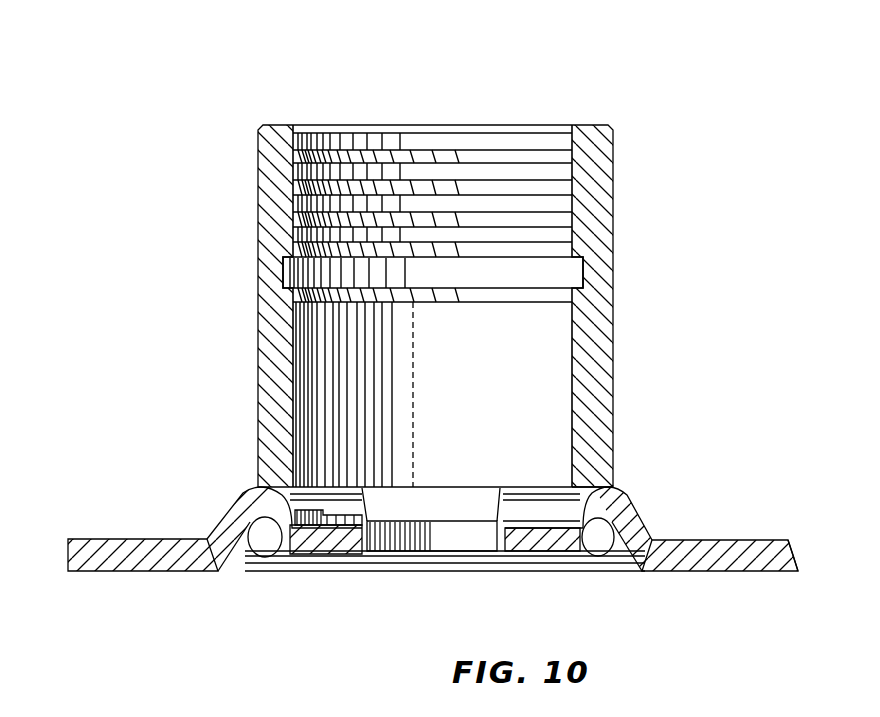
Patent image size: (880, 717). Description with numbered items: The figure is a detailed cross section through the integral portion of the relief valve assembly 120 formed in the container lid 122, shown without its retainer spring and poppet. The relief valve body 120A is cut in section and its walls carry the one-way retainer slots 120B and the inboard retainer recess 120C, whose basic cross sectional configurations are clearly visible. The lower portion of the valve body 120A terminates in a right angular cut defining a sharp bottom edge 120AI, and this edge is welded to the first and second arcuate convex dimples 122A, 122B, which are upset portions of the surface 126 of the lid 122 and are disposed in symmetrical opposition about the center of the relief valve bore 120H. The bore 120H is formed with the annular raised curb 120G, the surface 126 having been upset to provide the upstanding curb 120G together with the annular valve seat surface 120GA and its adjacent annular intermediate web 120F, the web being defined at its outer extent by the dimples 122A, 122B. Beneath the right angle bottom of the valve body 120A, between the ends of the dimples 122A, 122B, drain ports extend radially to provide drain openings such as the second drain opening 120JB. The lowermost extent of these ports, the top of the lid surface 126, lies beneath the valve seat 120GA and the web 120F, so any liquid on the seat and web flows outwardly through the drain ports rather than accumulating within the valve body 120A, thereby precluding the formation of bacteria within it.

The relief valve assembly 120 is at (690, 256).
The relief valve body 120A is at (607, 184).
The one-way retainer slots 120B is at (298, 158).
The inboard retainer recess 120C is at (288, 275).
The annular intermediate web 120F is at (310, 500).
The annular raised curb 120G is at (372, 492).
The annular valve seat surface 120GA is at (493, 490).
The second drain opening 120JB is at (487, 518).
The relief valve bore 120H is at (445, 535).
The sharp bottom edge 120AI is at (613, 480).
The container lid 122 is at (816, 513).
The first arcuate convex dimple 122A is at (243, 493).
The second arcuate convex dimple 122B is at (615, 498).
The surface of the container lid 126 is at (95, 553).